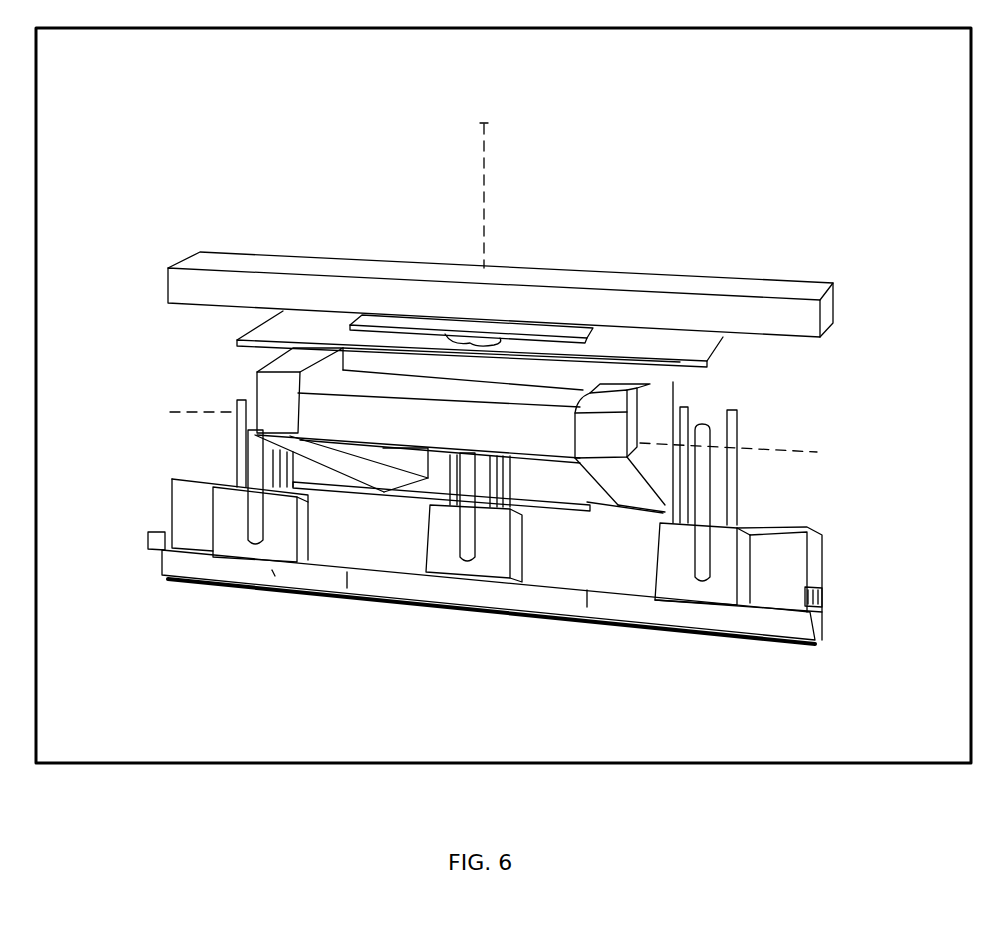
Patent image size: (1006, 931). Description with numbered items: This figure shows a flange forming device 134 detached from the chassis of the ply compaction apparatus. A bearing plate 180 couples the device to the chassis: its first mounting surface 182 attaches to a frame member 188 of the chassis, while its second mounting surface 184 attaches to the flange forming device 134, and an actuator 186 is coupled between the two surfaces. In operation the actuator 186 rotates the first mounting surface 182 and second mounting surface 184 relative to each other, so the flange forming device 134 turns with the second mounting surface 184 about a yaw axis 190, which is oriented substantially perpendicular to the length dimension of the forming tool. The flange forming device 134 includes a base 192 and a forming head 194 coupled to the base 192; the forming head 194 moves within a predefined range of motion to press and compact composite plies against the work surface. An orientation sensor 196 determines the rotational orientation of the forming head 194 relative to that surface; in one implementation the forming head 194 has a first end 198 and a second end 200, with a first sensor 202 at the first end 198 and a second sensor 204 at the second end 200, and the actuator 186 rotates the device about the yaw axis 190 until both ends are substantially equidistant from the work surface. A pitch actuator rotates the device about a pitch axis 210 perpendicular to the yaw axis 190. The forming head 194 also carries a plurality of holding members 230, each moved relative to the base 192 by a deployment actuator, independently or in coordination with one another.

The flange forming device 134 is at (550, 245).
The bearing plate 180 is at (575, 296).
The first mounting surface 182 is at (394, 320).
The second mounting surface 184 is at (698, 352).
The actuator 186 is at (449, 333).
The frame member 188 is at (307, 267).
The yaw axis 190 is at (484, 128).
The base 192 is at (232, 380).
The forming head 194 is at (860, 548).
The orientation sensor 196 is at (148, 490).
The first end 198 is at (852, 506).
The second end 200 is at (176, 455).
The first sensor 202 is at (820, 594).
The second sensor 204 is at (148, 541).
The pitch axis 210 is at (763, 454).
The holding members 230 is at (662, 608).